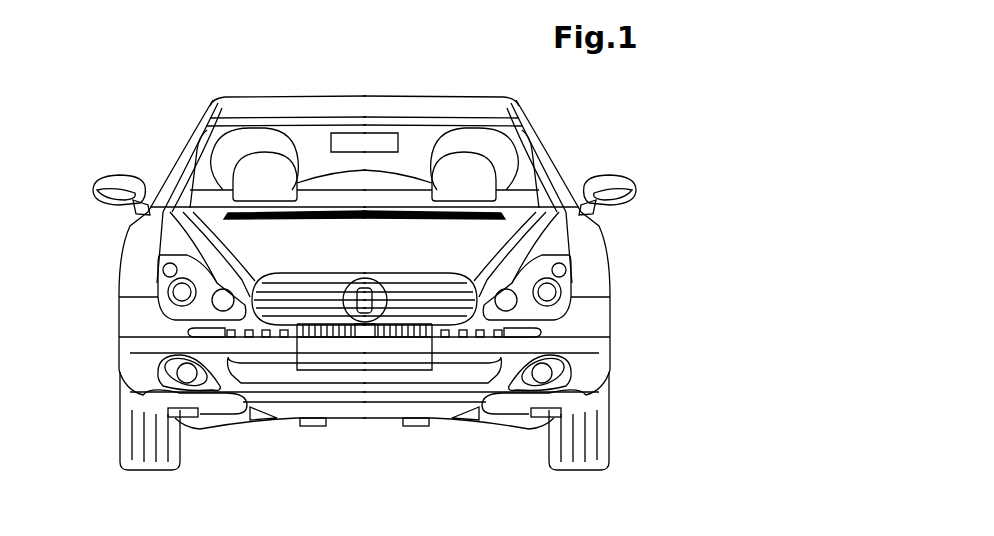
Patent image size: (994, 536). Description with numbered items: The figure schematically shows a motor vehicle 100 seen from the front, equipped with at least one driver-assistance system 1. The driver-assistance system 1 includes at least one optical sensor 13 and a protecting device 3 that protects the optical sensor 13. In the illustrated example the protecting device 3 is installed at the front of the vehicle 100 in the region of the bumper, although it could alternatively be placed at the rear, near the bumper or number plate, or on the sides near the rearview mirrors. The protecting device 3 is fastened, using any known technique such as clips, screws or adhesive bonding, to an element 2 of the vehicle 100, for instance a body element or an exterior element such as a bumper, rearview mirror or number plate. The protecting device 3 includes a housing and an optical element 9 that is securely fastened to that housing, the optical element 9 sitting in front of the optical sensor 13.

The motor vehicle 100 is at (146, 140).
The driver-assistance system 1 is at (363, 256).
The optical sensor 13 is at (369, 290).
The element of the vehicle 2 is at (385, 280).
The optical element 9 is at (366, 313).
The protecting device 3 is at (326, 310).